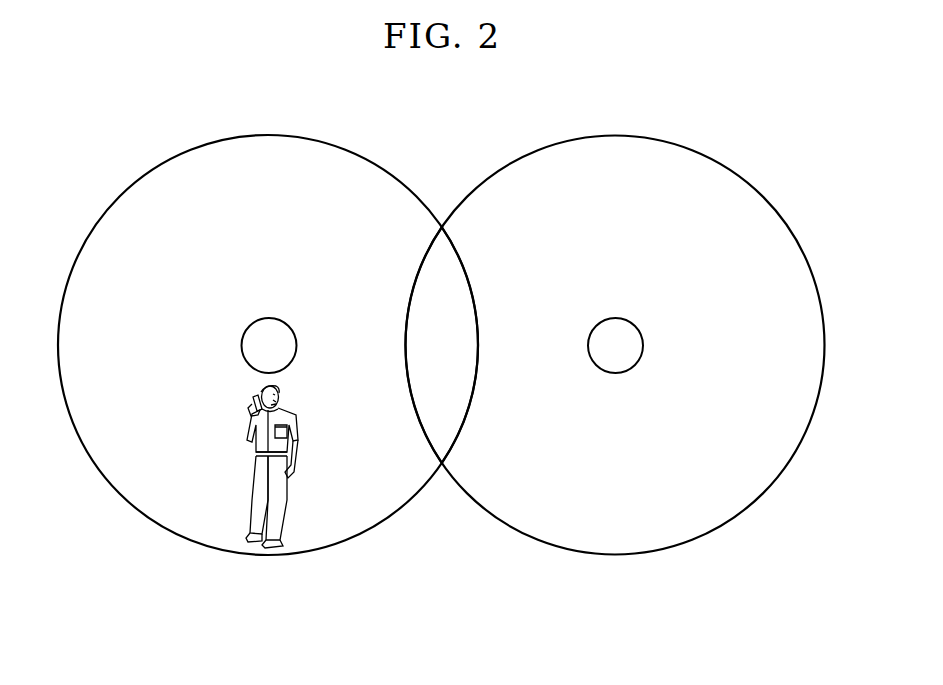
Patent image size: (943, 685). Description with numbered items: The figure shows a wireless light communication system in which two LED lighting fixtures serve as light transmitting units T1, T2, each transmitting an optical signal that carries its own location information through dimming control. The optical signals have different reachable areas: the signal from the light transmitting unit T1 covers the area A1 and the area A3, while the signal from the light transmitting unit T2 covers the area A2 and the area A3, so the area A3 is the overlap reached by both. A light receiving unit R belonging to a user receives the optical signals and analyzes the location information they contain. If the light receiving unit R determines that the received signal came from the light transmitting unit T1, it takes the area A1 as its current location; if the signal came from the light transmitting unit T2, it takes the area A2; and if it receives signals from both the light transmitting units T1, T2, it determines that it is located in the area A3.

The area A1 is at (268, 345).
The area A2 is at (615, 345).
The area A3 is at (441, 345).
The light transmitting unit T1 is at (269, 345).
The light transmitting unit T2 is at (615, 345).
The light receiving unit R is at (250, 405).